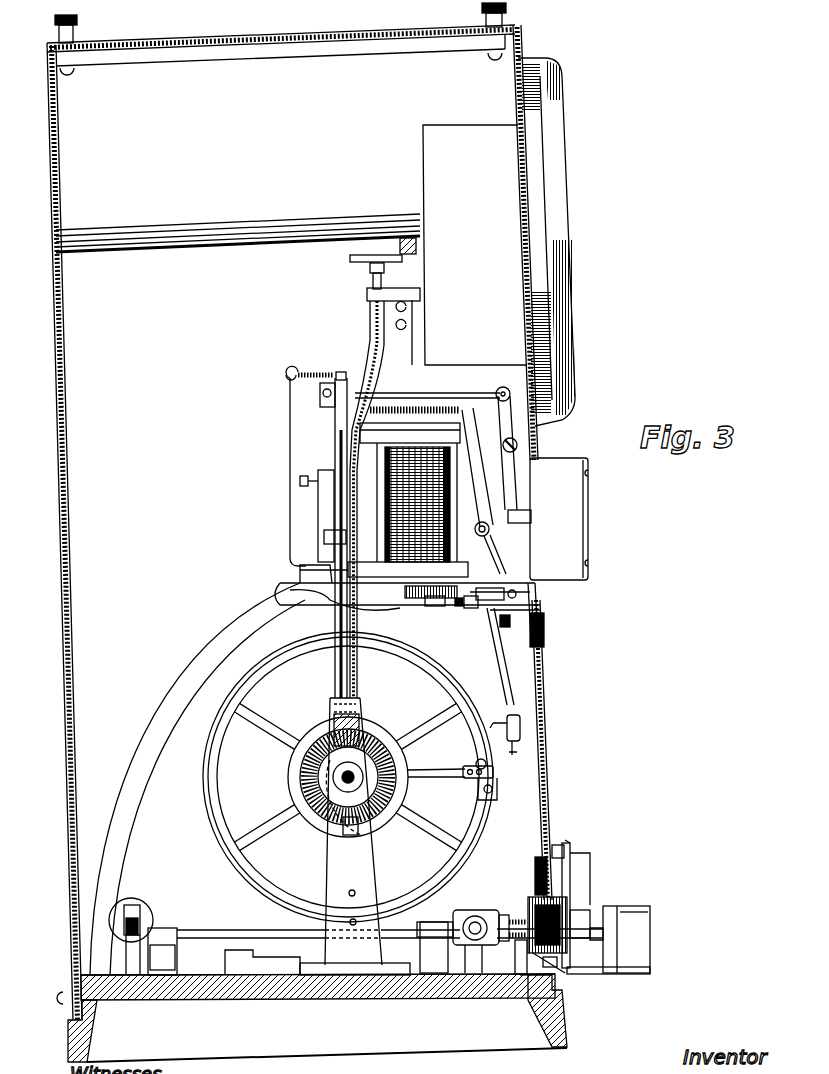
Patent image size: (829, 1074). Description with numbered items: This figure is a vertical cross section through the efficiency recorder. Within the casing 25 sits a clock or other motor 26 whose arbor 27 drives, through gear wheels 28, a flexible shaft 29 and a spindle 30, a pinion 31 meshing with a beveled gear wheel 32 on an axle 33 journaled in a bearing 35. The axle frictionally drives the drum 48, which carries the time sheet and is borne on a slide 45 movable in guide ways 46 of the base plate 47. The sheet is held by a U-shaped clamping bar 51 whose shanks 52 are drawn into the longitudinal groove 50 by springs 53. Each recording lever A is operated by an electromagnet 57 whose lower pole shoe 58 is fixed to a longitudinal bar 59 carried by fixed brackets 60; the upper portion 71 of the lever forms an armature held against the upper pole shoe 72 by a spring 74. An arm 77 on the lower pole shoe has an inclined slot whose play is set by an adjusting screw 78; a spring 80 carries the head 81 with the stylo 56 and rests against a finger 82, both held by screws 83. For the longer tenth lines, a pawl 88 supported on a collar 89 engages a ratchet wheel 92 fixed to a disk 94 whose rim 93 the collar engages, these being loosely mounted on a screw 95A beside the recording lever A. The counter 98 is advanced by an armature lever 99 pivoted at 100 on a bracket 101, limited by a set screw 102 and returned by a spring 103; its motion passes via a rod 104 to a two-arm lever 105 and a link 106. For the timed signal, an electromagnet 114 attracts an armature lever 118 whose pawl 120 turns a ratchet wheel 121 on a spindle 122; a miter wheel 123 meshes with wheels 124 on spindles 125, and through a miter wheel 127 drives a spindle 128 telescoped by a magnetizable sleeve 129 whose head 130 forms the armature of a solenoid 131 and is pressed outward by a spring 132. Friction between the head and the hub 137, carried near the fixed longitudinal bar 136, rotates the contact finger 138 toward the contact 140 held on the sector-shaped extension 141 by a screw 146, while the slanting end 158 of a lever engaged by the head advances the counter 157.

The casing 25 is at (62, 176).
The clock or other motor 26 is at (569, 189).
The arbor 27 is at (415, 249).
The gear wheels 28 is at (355, 258).
The flexible shaft 29 is at (387, 362).
The spring 103 is at (312, 373).
The armature lever 99 is at (300, 420).
The upper pole shoe 72 is at (350, 440).
The spindle 30 is at (336, 519).
The set screw 102 is at (300, 480).
The bracket 101 is at (320, 508).
The pivot 100 is at (328, 532).
The electromagnet 57 is at (410, 492).
The spring 74 is at (430, 405).
The rod 104 is at (501, 392).
The two-arm lever 105 is at (512, 430).
The upper portion of lever A 71 is at (478, 488).
The link 106 is at (530, 517).
The counter 98 is at (586, 514).
The longitudinal bar 59 is at (408, 572).
The lower pole shoe 58 is at (366, 573).
The fixed brackets 60 is at (315, 770).
The ratchet wheel 92 is at (420, 600).
The rim 93 is at (433, 602).
The disk 94 is at (459, 606).
The screw 95A is at (468, 608).
The arm 77 is at (512, 574).
The adjusting screw 78 is at (506, 583).
The pawl 88 is at (522, 593).
The collar 89 is at (528, 602).
The screws 83 is at (531, 627).
The spring 80 is at (543, 670).
The finger 82 is at (493, 660).
The stylo 56 is at (495, 712).
The head 81 is at (522, 733).
The drum 48 is at (241, 878).
The axle 33 is at (342, 777).
The bearing 35 is at (347, 786).
The pinion 31 is at (362, 714).
The beveled gear wheel 32 is at (372, 816).
The springs 53 is at (412, 768).
The longitudinal groove 50 is at (494, 771).
The U-shaped clamping bar 51 is at (500, 764).
The shanks 52 is at (480, 785).
The electromagnet 114 is at (135, 897).
The armature lever 118 is at (150, 919).
The pawl 120 is at (146, 904).
The ratchet wheel 121 is at (177, 954).
The spindle 122 is at (318, 922).
The slide 45 is at (287, 956).
The guide ways 46 is at (243, 957).
The base plate 47 is at (360, 995).
The miter wheels 124 is at (482, 906).
The miter wheel 123 is at (463, 912).
The miter wheel 127 is at (492, 909).
The spindles 125 is at (512, 975).
The spring 132 is at (520, 975).
The spindle 128 is at (528, 1000).
The flange or head 130 is at (587, 912).
The solenoid 131 is at (560, 949).
The magnetizable sleeve 129 is at (572, 904).
The contact finger 138 is at (588, 861).
The sector-shaped extension 141 is at (560, 844).
The contact 140 is at (568, 841).
The screw 146 is at (541, 841).
The hub 137 is at (618, 907).
The counter 157 is at (643, 932).
The fixed longitudinal bar 136 is at (590, 969).
The slanting end 158 is at (560, 964).